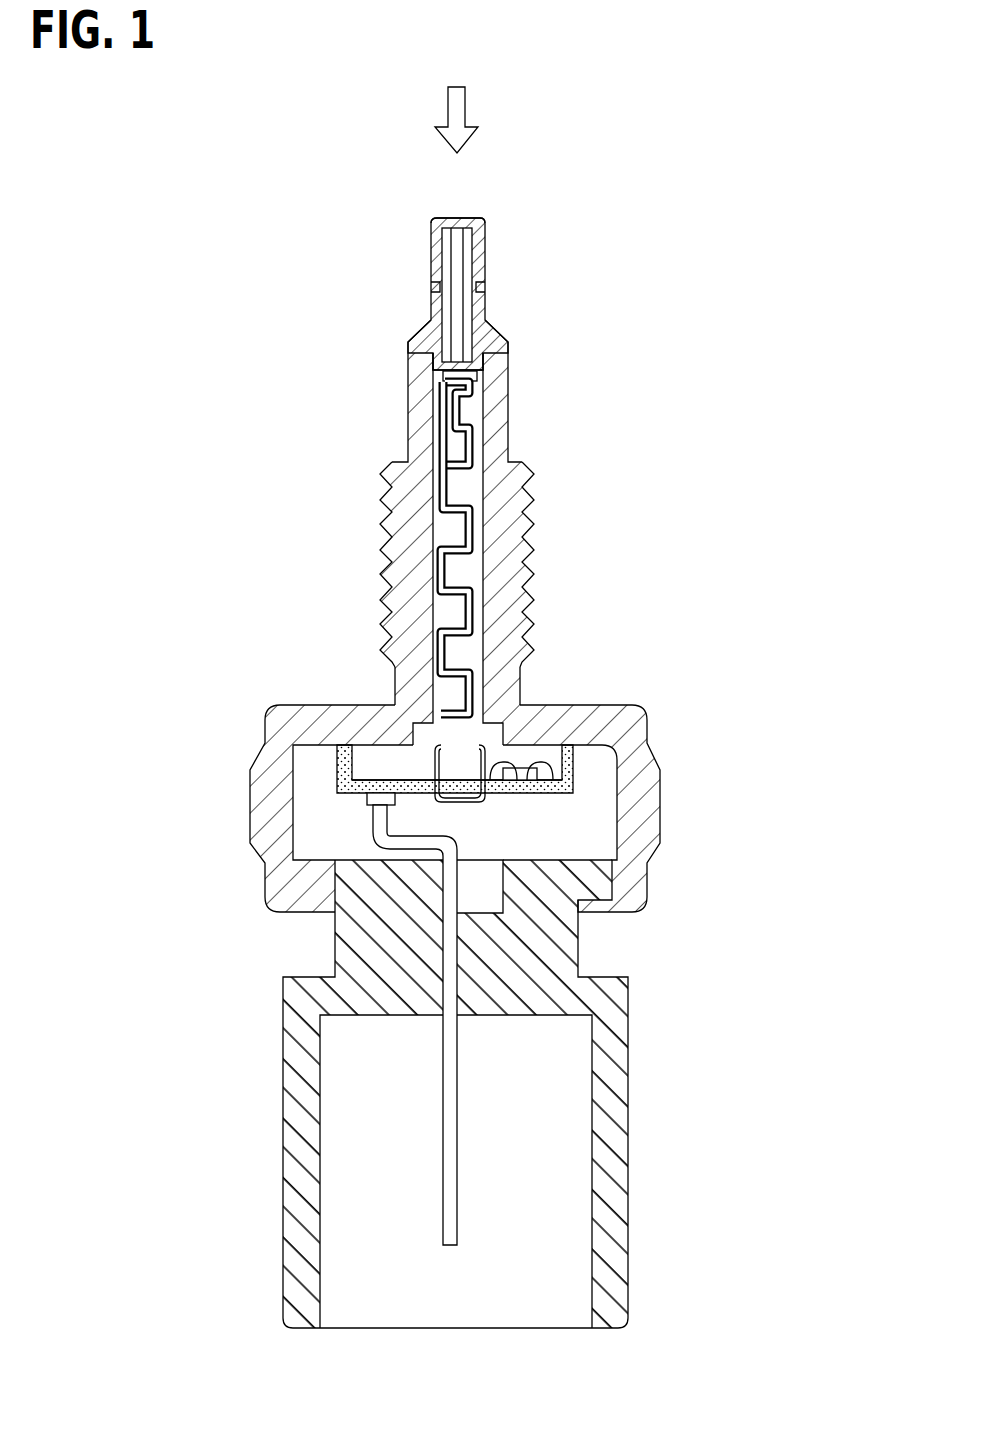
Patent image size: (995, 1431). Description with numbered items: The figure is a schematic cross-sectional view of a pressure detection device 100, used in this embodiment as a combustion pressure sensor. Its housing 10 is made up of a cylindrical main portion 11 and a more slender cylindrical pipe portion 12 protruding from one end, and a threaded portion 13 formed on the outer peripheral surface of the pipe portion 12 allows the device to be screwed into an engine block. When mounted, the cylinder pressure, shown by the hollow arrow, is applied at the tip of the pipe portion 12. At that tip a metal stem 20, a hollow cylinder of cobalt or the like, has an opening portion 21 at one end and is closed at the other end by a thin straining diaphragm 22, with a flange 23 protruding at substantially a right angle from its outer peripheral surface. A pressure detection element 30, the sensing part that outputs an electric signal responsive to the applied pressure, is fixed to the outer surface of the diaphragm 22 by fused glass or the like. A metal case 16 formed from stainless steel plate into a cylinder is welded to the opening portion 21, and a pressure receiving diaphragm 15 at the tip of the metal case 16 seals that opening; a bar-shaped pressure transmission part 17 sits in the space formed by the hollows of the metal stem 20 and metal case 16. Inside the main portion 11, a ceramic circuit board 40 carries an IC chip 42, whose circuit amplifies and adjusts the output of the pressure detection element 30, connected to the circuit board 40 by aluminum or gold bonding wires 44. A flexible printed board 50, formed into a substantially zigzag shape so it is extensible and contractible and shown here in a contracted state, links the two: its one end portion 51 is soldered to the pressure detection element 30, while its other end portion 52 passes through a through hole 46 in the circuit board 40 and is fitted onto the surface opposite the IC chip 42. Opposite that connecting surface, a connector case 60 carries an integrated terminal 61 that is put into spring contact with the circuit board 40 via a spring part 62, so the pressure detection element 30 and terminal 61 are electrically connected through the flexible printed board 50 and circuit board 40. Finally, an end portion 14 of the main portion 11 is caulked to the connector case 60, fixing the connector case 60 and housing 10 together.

The pressure detection device 100 is at (240, 207).
The housing 10 is at (648, 717).
The main portion 11 is at (263, 747).
The pipe portion 12 is at (413, 417).
The threaded portion 13 is at (388, 518).
The end portion 14 is at (270, 912).
The pressure receiving diaphragm 15 is at (462, 218).
The metal case 16 is at (478, 250).
The pressure transmission part 17 is at (456, 279).
The metal stem 20 is at (428, 314).
The opening portion 21 is at (428, 298).
The diaphragm 22 is at (408, 353).
The flange 23 is at (408, 342).
The pressure detection element 30 is at (477, 361).
The circuit board 40 is at (337, 760).
The IC chip 42 is at (518, 766).
The bonding wires 44 is at (540, 763).
The through hole 46 is at (385, 770).
The flexible printed board 50 is at (481, 441).
The one end portion 51 is at (478, 401).
The other end portion 52 is at (487, 803).
The connector case 60 is at (629, 1100).
The terminal 61 is at (452, 1212).
The spring part 62 is at (367, 797).